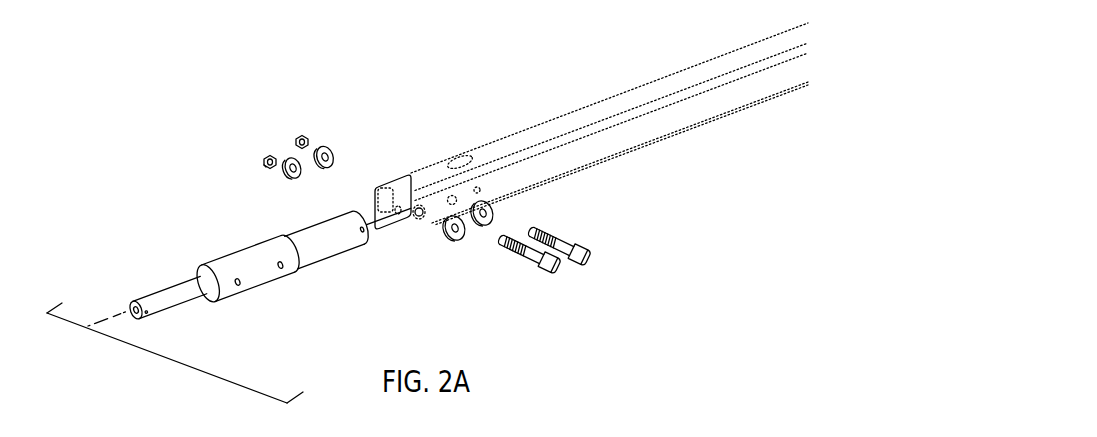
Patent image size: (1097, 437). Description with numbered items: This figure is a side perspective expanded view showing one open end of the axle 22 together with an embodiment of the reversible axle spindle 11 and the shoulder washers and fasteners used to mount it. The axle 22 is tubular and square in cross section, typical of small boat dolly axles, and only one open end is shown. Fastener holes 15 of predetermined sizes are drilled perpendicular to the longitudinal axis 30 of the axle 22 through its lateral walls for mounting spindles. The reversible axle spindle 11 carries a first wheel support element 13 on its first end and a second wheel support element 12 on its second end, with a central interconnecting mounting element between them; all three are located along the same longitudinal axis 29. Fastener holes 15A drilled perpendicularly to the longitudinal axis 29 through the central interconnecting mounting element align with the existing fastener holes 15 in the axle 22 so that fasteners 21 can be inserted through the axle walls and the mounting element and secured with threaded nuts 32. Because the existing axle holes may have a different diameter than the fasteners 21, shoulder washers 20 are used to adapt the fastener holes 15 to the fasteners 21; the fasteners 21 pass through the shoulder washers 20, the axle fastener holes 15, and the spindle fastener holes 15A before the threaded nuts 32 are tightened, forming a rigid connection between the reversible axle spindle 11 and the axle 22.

The reversible axle spindle 11 is at (207, 207).
The second wheel support element 12 is at (323, 250).
The first wheel support element 13 is at (163, 307).
The fastener holes 15 is at (418, 215).
The fastener holes 15A is at (283, 270).
The shoulder washers 20 is at (335, 152).
The fasteners 21 is at (557, 273).
The axle 22 is at (653, 133).
The longitudinal axis 29 is at (112, 318).
The longitudinal axis 30 is at (398, 214).
The threaded nuts 32 is at (298, 140).